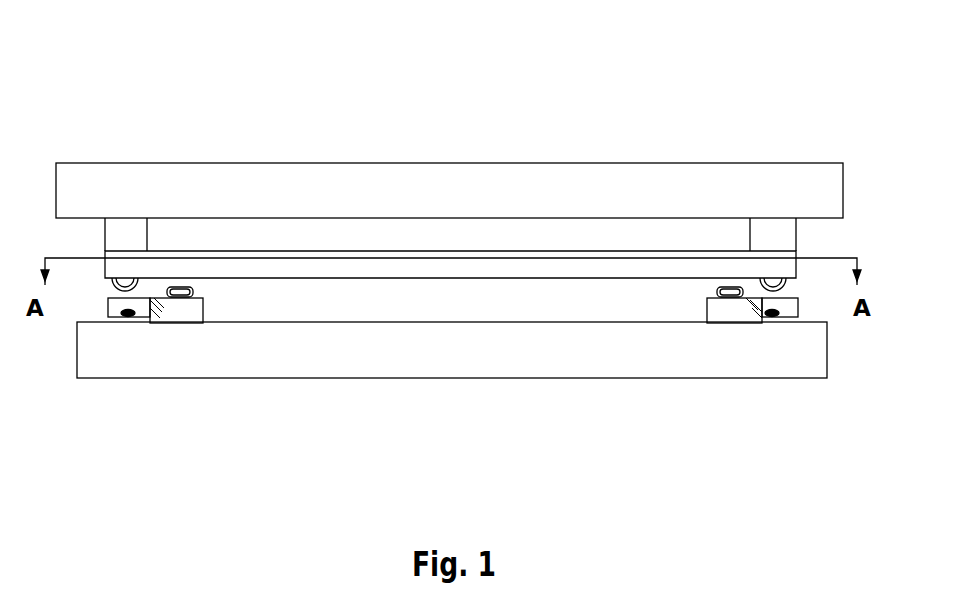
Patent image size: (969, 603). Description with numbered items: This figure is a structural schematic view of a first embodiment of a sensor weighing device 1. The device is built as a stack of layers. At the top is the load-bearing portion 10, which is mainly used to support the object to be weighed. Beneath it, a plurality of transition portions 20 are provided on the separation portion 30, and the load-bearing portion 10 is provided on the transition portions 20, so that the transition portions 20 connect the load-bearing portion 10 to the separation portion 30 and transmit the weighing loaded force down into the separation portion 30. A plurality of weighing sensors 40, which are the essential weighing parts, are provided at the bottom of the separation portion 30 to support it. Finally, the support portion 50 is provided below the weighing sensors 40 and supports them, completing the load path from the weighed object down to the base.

The sensor weighing device 1 is at (705, 107).
The load-bearing portion 10 is at (323, 188).
The transition portions 20 is at (130, 232).
The separation portion 30 is at (485, 263).
The weighing sensors 40 is at (173, 307).
The support portion 50 is at (337, 355).